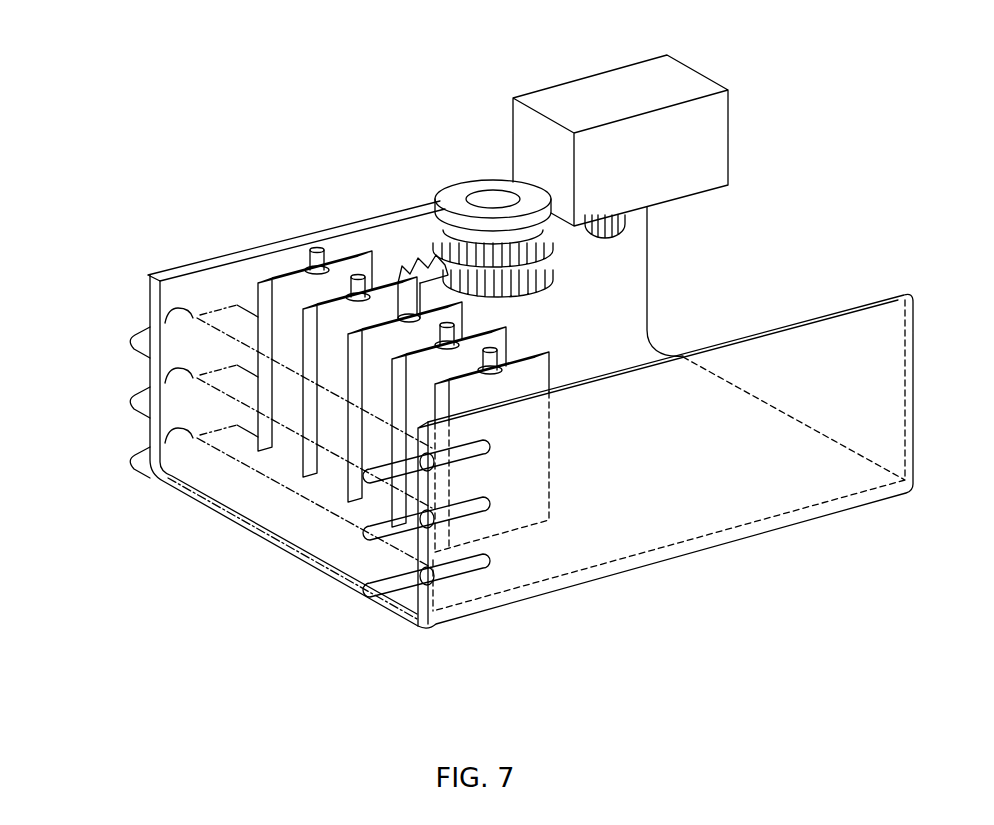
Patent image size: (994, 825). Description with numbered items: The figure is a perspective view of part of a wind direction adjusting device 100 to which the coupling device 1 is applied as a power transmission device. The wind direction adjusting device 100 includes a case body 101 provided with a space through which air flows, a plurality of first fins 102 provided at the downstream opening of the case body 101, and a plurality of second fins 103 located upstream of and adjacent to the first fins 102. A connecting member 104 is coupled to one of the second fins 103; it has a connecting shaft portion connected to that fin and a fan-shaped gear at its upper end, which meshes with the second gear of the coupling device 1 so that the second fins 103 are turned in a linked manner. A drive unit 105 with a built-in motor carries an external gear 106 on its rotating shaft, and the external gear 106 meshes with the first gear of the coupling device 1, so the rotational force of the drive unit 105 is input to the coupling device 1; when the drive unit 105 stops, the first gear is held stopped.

The wind direction adjusting device 100 is at (207, 163).
The coupling device 1 is at (470, 174).
The case body 101 is at (683, 553).
The first fins 102 is at (132, 334).
The second fins 103 is at (284, 278).
The connecting member 104 is at (413, 256).
The drive unit 105 is at (598, 92).
The external gear 106 is at (600, 234).